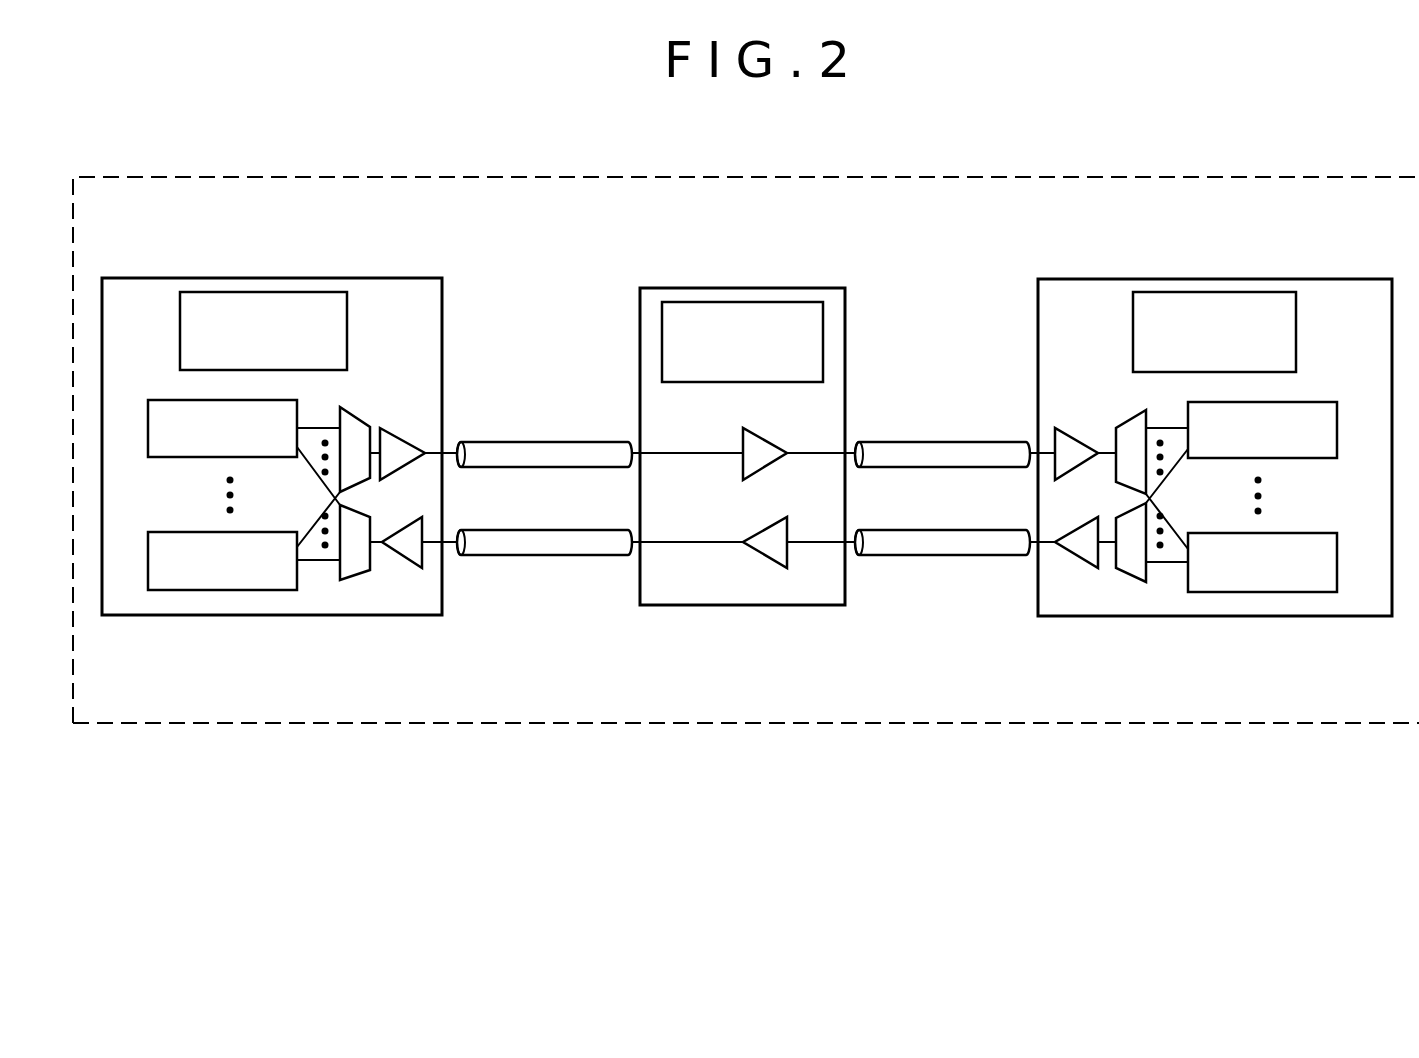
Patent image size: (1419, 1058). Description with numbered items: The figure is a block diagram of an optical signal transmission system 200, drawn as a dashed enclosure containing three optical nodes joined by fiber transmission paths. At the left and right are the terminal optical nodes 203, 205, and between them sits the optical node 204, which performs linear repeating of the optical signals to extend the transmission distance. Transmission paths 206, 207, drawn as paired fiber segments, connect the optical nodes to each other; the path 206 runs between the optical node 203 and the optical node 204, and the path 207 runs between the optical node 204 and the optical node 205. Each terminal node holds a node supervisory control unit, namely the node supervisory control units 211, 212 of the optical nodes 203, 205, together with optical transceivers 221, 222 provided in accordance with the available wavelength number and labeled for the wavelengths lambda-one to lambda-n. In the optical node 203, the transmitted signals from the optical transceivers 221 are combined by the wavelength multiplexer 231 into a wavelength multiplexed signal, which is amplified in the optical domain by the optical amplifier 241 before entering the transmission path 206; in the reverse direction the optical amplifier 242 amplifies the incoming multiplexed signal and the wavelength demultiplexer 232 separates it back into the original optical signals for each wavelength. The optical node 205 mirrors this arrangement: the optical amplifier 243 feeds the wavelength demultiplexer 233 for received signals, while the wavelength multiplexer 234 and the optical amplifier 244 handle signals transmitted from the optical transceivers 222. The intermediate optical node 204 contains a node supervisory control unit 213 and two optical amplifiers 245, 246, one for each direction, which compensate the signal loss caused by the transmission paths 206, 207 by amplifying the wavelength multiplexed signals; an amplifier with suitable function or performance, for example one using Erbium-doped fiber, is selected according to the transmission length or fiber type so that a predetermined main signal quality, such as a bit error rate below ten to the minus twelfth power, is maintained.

The optical signal transmission system 200 is at (1022, 724).
The optical node 203 is at (287, 616).
The optical node 204 is at (826, 606).
The optical node 205 is at (1350, 616).
The transmission path 206 is at (540, 575).
The transmission path 207 is at (930, 575).
The node supervisory control unit 211 is at (265, 292).
The node supervisory control unit 212 is at (1198, 292).
The node supervisory control unit 213 is at (750, 302).
The optical transceivers 221 is at (210, 400).
The optical transceivers 222 is at (1250, 402).
The wavelength multiplexer 231 is at (360, 420).
The wavelength demultiplexer 232 is at (353, 565).
The wavelength demultiplexer 233 is at (1130, 420).
The wavelength multiplexer 234 is at (1132, 563).
The optical amplifier 241 is at (403, 437).
The optical amplifier 242 is at (413, 548).
The optical amplifier 243 is at (1053, 445).
The optical amplifier 244 is at (1075, 560).
The optical amplifier 245 is at (773, 443).
The optical amplifier 246 is at (767, 547).